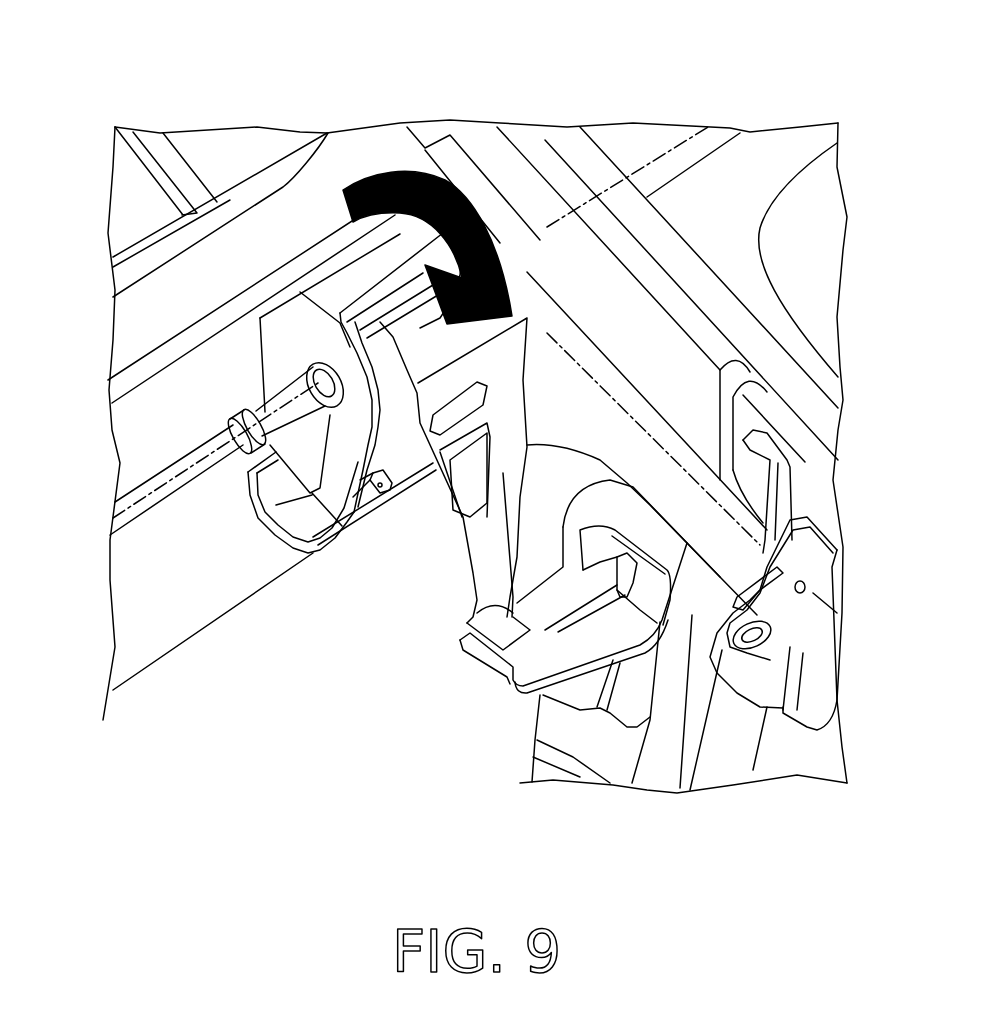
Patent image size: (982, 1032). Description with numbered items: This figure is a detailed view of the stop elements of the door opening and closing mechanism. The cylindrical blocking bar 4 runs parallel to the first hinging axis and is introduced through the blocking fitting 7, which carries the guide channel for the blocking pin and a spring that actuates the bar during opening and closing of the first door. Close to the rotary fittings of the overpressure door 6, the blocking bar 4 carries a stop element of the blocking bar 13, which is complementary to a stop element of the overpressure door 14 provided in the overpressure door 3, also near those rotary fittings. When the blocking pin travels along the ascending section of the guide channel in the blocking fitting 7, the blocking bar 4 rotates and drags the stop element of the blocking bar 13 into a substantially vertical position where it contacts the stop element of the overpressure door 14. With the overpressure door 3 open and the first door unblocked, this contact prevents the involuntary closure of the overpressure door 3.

The overpressure door 3 is at (577, 763).
The blocking bar 4 is at (153, 487).
The rotary fittings of the overpressure door 6 is at (760, 618).
The blocking fitting 7 is at (338, 283).
The stop element of the blocking bar 13 is at (443, 510).
The stop element of the overpressure door 14 is at (550, 632).